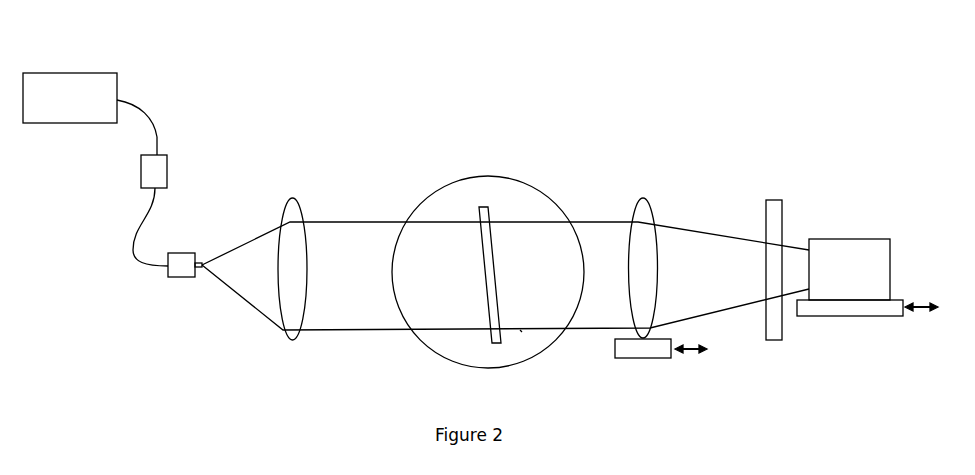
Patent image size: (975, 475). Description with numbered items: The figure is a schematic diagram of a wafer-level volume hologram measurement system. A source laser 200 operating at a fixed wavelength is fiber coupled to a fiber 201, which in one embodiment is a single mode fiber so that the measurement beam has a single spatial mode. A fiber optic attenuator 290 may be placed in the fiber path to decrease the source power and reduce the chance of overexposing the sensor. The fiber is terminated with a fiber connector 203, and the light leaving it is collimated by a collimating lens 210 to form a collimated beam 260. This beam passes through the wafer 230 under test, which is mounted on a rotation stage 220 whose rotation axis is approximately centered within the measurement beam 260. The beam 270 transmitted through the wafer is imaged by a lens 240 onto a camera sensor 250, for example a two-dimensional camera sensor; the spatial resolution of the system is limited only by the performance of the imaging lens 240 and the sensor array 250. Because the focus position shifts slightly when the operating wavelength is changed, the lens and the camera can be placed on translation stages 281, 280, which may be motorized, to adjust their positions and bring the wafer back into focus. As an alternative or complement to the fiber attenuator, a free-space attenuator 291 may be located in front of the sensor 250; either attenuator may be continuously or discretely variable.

The source laser 200 is at (87, 75).
The fiber 201 is at (158, 138).
The fiber optic attenuator 290 is at (141, 171).
The fiber connector 203 is at (180, 253).
The collimating lens 210 is at (291, 197).
The rotation stage 220 is at (447, 185).
The wafer 230 is at (491, 210).
The lens 240 is at (643, 197).
The camera sensor 250 is at (852, 239).
The collimated beam 260 is at (337, 333).
The transmitted beam 270 is at (520, 330).
The translation stage 280 is at (848, 316).
The translation stage 281 is at (643, 358).
The free-space attenuator 291 is at (777, 200).